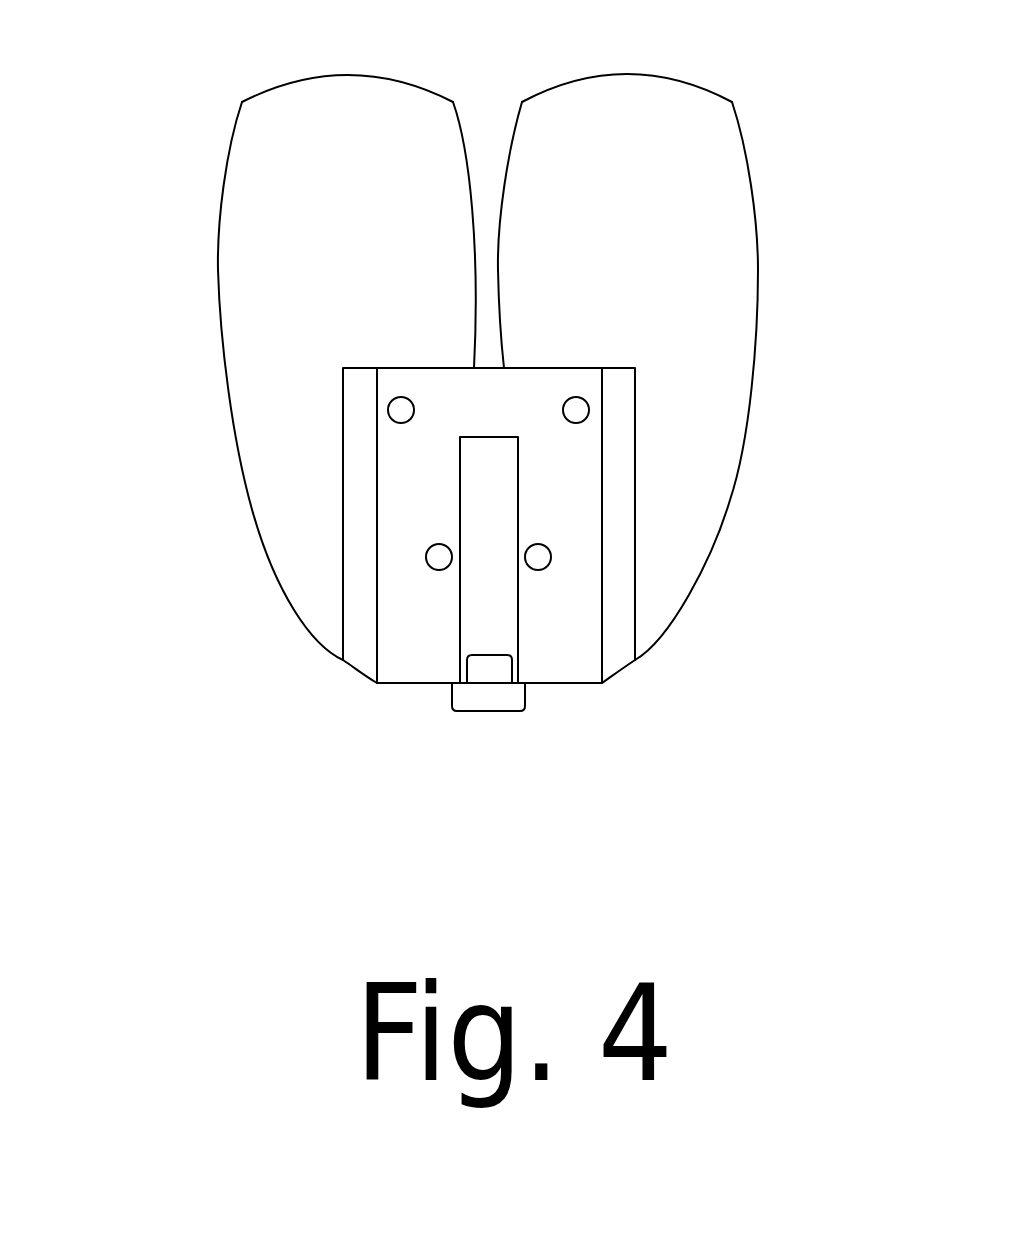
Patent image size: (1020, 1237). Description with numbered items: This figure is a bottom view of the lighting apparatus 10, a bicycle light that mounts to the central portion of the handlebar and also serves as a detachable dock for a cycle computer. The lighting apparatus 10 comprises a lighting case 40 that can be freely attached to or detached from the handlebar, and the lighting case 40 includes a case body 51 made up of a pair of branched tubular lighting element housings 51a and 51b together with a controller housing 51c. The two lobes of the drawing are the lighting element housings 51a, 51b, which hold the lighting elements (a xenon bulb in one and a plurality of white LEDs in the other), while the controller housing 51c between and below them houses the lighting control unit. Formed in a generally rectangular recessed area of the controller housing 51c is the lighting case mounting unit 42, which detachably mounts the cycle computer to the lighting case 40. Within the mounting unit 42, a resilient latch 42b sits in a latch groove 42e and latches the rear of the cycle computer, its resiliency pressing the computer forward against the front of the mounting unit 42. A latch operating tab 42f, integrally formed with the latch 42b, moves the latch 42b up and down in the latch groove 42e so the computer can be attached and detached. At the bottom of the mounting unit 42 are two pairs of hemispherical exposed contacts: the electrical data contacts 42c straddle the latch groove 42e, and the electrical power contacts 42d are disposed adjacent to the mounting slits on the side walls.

The lighting apparatus 10 is at (192, 220).
The lighting case 40 is at (200, 140).
The case body 51 is at (255, 125).
The lighting element housing 51a is at (237, 277).
The lighting element housing 51b is at (710, 188).
The controller housing 51c is at (290, 523).
The lighting case mounting unit 42 is at (372, 427).
The resilient latch 42b is at (498, 672).
The electrical data contacts 42c is at (452, 563).
The electrical power contacts 42d is at (414, 410).
The latch groove 42e is at (463, 523).
The latch operating tab 42f is at (467, 702).